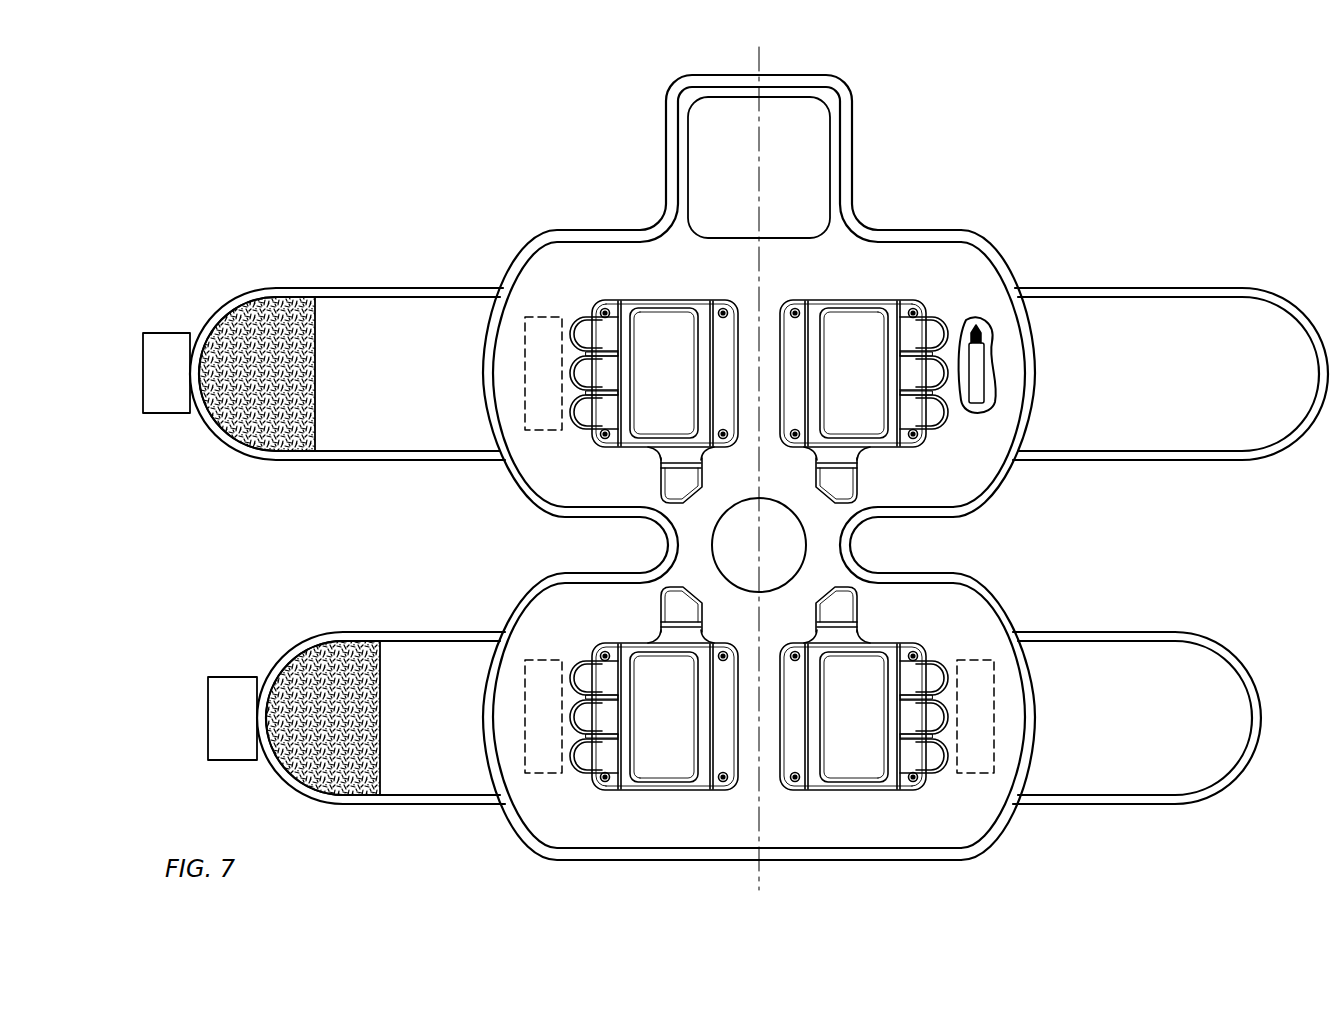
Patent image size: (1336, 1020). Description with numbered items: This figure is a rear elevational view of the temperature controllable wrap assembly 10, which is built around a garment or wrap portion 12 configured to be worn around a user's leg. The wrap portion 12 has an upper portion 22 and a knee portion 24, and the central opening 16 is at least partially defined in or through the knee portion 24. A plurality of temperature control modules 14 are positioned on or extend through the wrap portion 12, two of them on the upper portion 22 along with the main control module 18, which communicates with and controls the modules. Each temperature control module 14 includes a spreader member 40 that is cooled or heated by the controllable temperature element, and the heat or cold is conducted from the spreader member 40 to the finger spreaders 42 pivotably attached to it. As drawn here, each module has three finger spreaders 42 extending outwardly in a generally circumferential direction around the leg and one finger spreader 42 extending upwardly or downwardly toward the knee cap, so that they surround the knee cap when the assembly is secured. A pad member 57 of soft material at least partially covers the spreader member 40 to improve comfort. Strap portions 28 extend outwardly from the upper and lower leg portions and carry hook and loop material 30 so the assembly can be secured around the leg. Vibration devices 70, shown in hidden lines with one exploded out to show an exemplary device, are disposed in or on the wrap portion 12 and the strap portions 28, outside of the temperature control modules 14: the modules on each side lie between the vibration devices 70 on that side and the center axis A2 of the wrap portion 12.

The temperature controllable wrap assembly 10 is at (1048, 146).
The wrap portion 12 is at (547, 258).
The temperature control module 14 is at (610, 262).
The central opening 16 is at (769, 562).
The main control module 18 is at (800, 127).
The upper portion 22 is at (972, 258).
The knee portion 24 is at (830, 547).
The strap portion 28 is at (377, 315).
The hook and loop material 30 is at (248, 318).
The spreader member 40 is at (650, 386).
The finger spreader 42 is at (585, 418).
The pad member 57 is at (706, 308).
The vibration device 70 is at (540, 328).
The center axis A2 is at (759, 62).